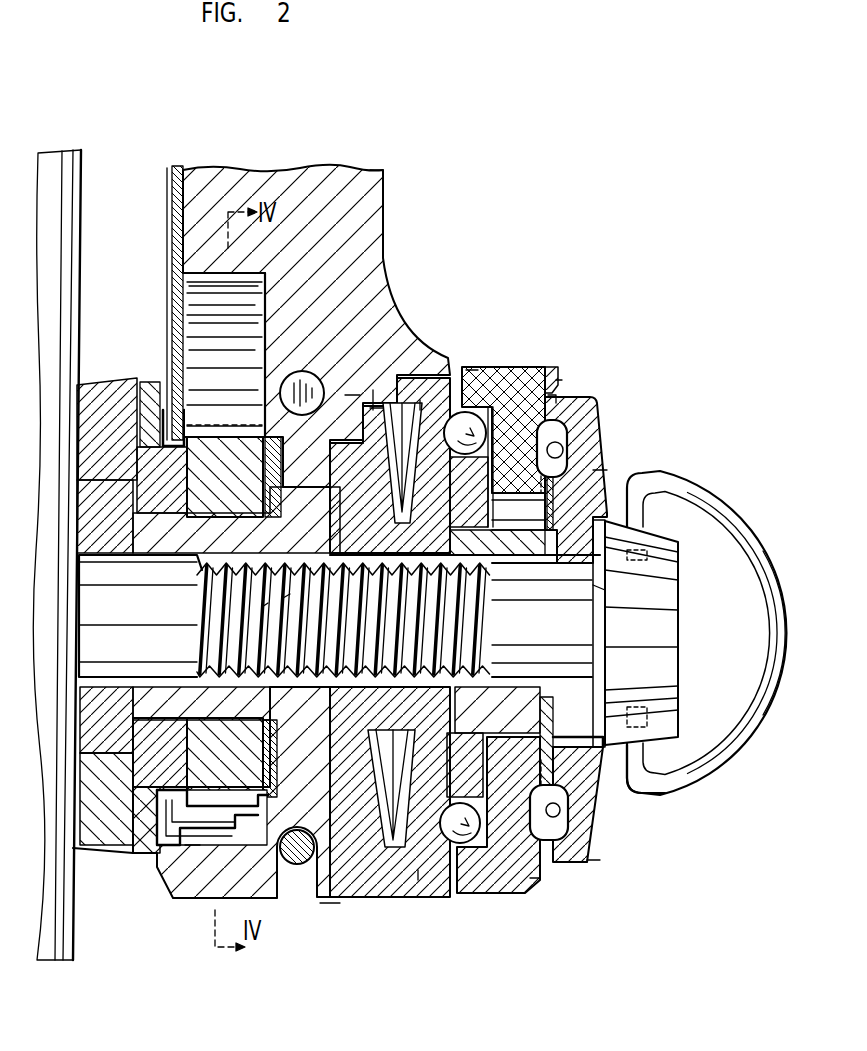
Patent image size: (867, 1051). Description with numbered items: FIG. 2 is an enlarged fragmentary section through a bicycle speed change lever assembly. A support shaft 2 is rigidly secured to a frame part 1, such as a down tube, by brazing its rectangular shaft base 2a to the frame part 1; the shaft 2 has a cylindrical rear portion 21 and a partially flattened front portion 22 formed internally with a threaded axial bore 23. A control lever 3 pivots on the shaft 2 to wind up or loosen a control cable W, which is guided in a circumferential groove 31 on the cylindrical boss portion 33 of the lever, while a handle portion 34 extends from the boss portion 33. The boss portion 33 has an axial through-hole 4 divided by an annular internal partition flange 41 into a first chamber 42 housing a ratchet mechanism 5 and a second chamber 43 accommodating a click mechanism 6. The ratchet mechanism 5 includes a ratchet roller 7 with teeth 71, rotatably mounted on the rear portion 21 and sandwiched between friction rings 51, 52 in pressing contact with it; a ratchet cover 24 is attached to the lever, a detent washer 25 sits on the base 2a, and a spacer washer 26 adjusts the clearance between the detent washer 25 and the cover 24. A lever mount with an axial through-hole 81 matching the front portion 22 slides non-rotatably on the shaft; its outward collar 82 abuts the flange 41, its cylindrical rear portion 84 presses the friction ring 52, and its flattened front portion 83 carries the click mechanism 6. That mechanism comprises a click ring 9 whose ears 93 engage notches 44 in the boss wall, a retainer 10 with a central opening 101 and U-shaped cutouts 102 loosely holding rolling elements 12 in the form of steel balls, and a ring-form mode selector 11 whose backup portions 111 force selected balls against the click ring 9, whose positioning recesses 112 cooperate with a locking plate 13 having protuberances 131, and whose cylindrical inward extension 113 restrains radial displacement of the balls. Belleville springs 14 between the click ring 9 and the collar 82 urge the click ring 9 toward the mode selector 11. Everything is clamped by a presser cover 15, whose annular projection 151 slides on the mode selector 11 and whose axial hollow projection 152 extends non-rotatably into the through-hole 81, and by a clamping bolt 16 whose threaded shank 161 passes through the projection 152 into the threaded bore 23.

The frame part 1 is at (92, 178).
The support shaft 2 is at (190, 548).
The rectangular shaft base 2a is at (85, 760).
The control lever 3 is at (390, 200).
The axial through-hole 4 is at (358, 905).
The ratchet mechanism 5 is at (210, 378).
The click mechanism 6 is at (480, 892).
The ratchet roller 7 is at (175, 830).
The click ring 9 is at (498, 380).
The retainer 10 is at (588, 423).
The ring-form mode selector 11 is at (547, 365).
The rolling elements 12 is at (545, 395).
The locking plate 13 is at (683, 560).
The belleville springs 14 is at (402, 860).
The presser cover 15 is at (654, 492).
The clamping bolt 16 is at (678, 690).
The cylindrical rear portion 21 is at (143, 515).
The partially flattened front portion 22 is at (373, 390).
The threaded axial bore 23 is at (283, 598).
The ratchet cover 24 is at (172, 232).
The detent washer 25 is at (110, 805).
The spacer washer 26 is at (135, 822).
The circumferential groove 31 is at (283, 870).
The cylindrical boss portion 33 is at (328, 905).
The handle portion 34 is at (390, 174).
The annular internal partition flange 41 is at (333, 390).
The first chamber 42 is at (190, 845).
The second chamber 43 is at (375, 408).
The notches 44 is at (420, 400).
The friction ring 51 is at (126, 420).
The friction ring 52 is at (290, 375).
The teeth 71 is at (210, 850).
The axial through-hole 81 is at (640, 643).
The outward collar 82 is at (350, 395).
The flattened front portion 83 is at (680, 505).
The cylindrical rear portion 84 is at (167, 387).
The ears 93 is at (455, 425).
The central opening 101 is at (605, 590).
The U-shaped cutouts 102 is at (560, 400).
The backup portions 111 is at (560, 382).
The positioning recesses 112 is at (600, 471).
The cylindrical inward extension 113 is at (468, 372).
The protuberances 131 is at (568, 443).
The inwardly directed annular projection 151 is at (562, 868).
The axial hollow projection 152 is at (597, 790).
The threaded shank 161 is at (262, 607).
The control cable W is at (297, 866).